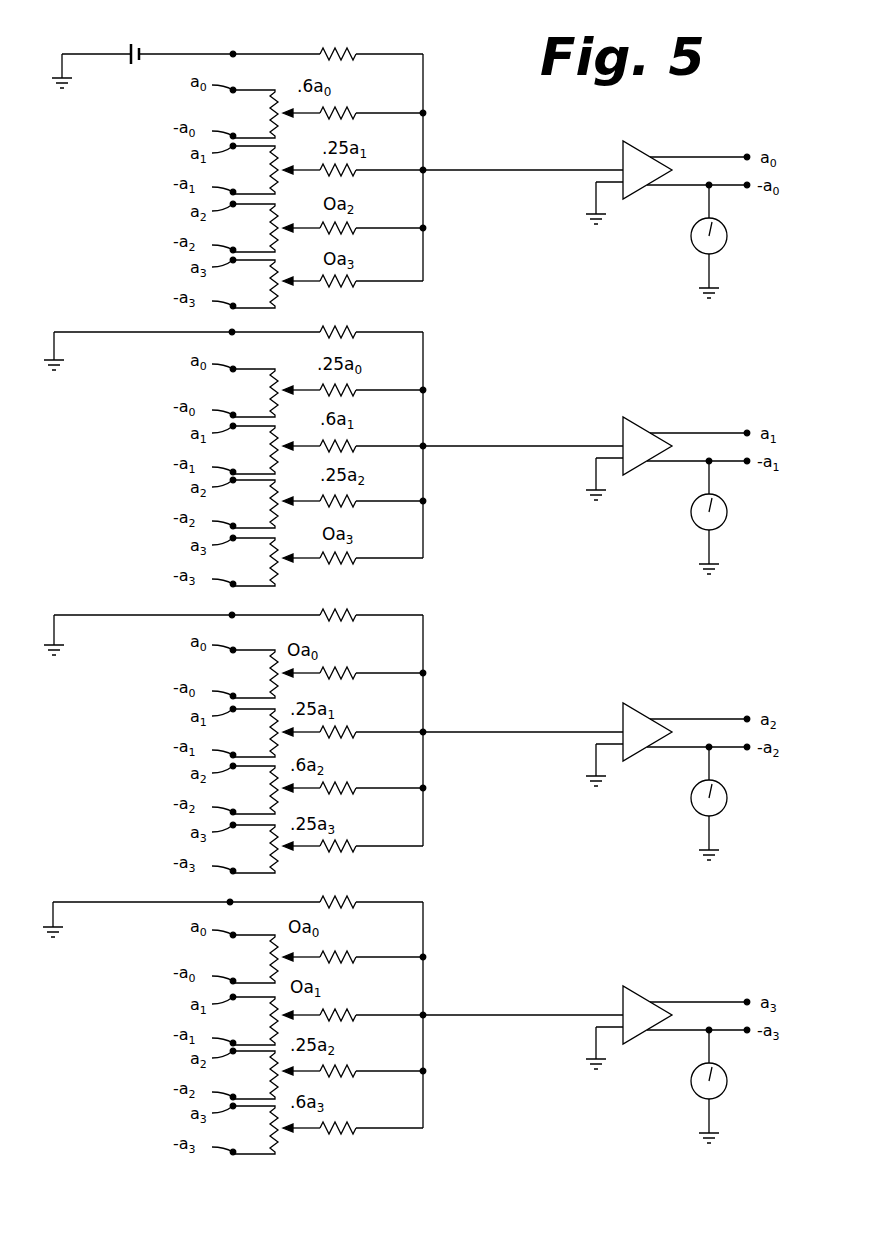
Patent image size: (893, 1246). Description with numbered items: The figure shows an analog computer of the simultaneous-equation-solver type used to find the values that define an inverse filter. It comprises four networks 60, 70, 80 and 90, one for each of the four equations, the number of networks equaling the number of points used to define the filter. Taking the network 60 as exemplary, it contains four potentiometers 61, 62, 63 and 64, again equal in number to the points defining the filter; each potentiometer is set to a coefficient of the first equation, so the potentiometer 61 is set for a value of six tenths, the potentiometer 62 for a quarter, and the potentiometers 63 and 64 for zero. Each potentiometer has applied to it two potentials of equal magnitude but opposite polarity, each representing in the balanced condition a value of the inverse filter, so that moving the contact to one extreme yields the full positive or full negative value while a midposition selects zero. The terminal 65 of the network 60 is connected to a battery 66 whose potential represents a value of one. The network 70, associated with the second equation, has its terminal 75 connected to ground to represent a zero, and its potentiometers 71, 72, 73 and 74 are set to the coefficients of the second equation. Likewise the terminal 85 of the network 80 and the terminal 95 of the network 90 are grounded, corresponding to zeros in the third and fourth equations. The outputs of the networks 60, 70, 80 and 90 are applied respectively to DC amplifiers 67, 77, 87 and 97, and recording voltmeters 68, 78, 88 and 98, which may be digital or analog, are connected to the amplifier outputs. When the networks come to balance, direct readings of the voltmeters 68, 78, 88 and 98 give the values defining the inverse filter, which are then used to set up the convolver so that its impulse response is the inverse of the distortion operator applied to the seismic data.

The network 60 is at (423, 205).
The potentiometer 61 is at (281, 120).
The potentiometer 62 is at (281, 176).
The potentiometer 63 is at (281, 234).
The potentiometer 64 is at (281, 290).
The terminal 65 is at (234, 52).
The battery 66 is at (140, 46).
The DC amplifier 67 is at (632, 158).
The voltmeter 68 is at (727, 236).
The network 70 is at (423, 480).
The potentiometer 71 is at (281, 399).
The potentiometer 72 is at (281, 456).
The potentiometer 73 is at (281, 510).
The potentiometer 74 is at (281, 568).
The terminal 75 is at (232, 331).
The DC amplifier 77 is at (632, 434).
The voltmeter 78 is at (727, 512).
The network 80 is at (423, 752).
The terminal 85 is at (232, 615).
The DC amplifier 87 is at (634, 710).
The voltmeter 88 is at (727, 798).
The network 90 is at (423, 1040).
The terminal 95 is at (230, 902).
The DC amplifier 97 is at (632, 995).
The voltmeter 98 is at (727, 1085).